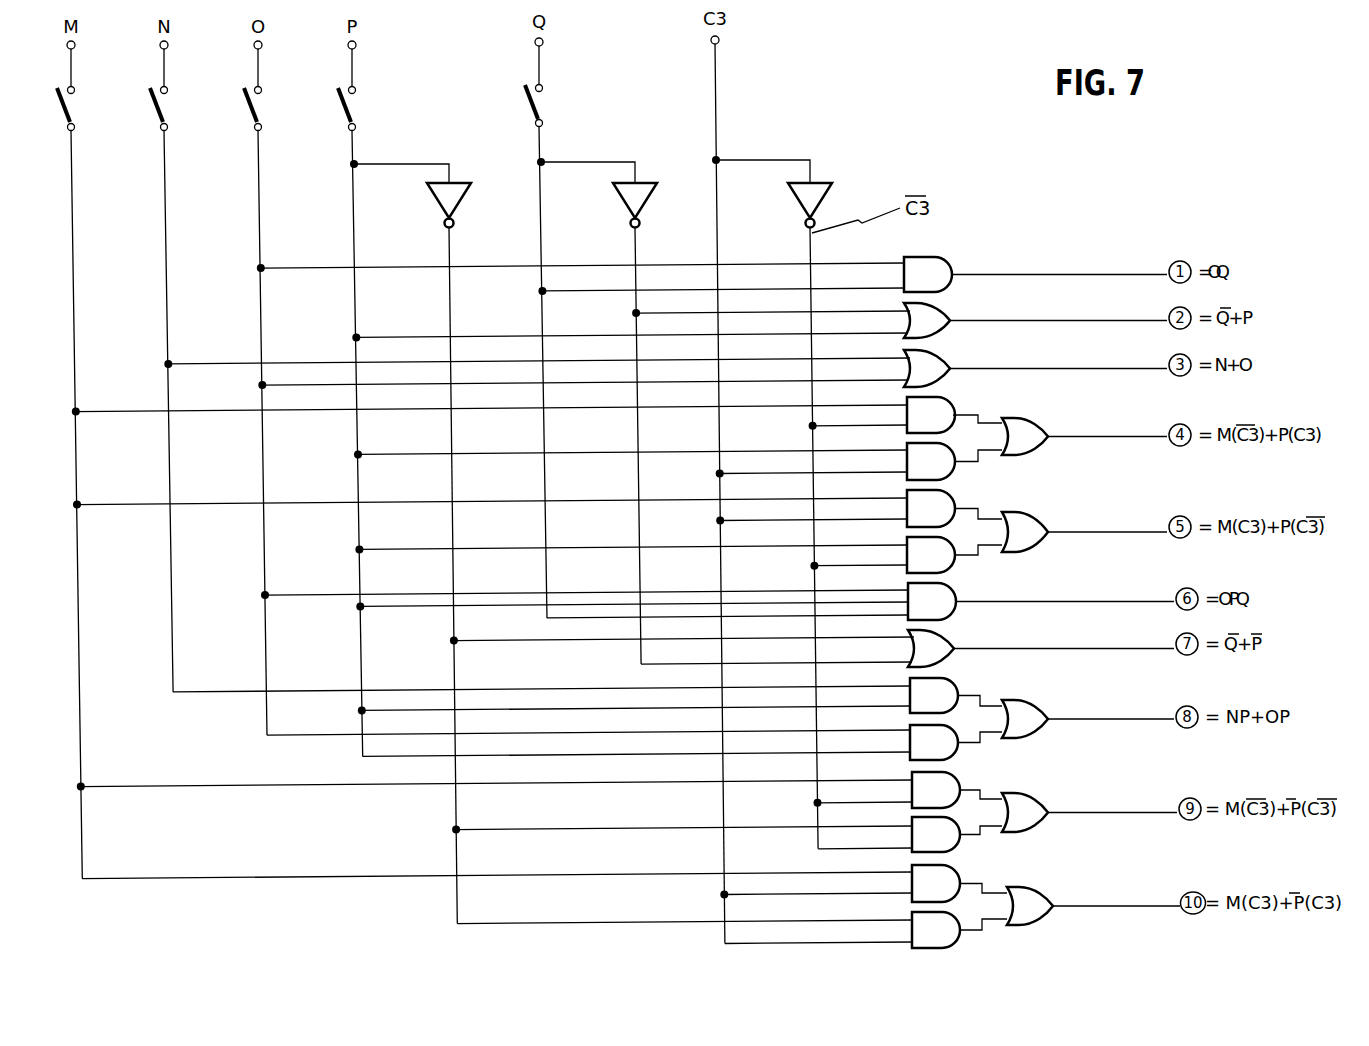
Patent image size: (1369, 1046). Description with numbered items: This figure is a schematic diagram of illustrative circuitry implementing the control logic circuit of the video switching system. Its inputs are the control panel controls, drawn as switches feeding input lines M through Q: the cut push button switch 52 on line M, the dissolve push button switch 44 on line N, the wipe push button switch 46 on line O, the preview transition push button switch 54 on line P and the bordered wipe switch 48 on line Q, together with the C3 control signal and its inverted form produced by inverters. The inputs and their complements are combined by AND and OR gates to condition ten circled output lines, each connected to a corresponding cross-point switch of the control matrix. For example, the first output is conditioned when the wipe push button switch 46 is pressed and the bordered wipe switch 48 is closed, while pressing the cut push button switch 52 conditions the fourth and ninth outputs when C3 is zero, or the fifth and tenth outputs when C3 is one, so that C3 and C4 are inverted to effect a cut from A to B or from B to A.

The cut push button switch 52 is at (74, 114).
The dissolve push button switch 44 is at (167, 114).
The wipe push button switch 46 is at (261, 114).
The preview transition push button switch 54 is at (355, 114).
The bordered wipe switch 48 is at (542, 110).